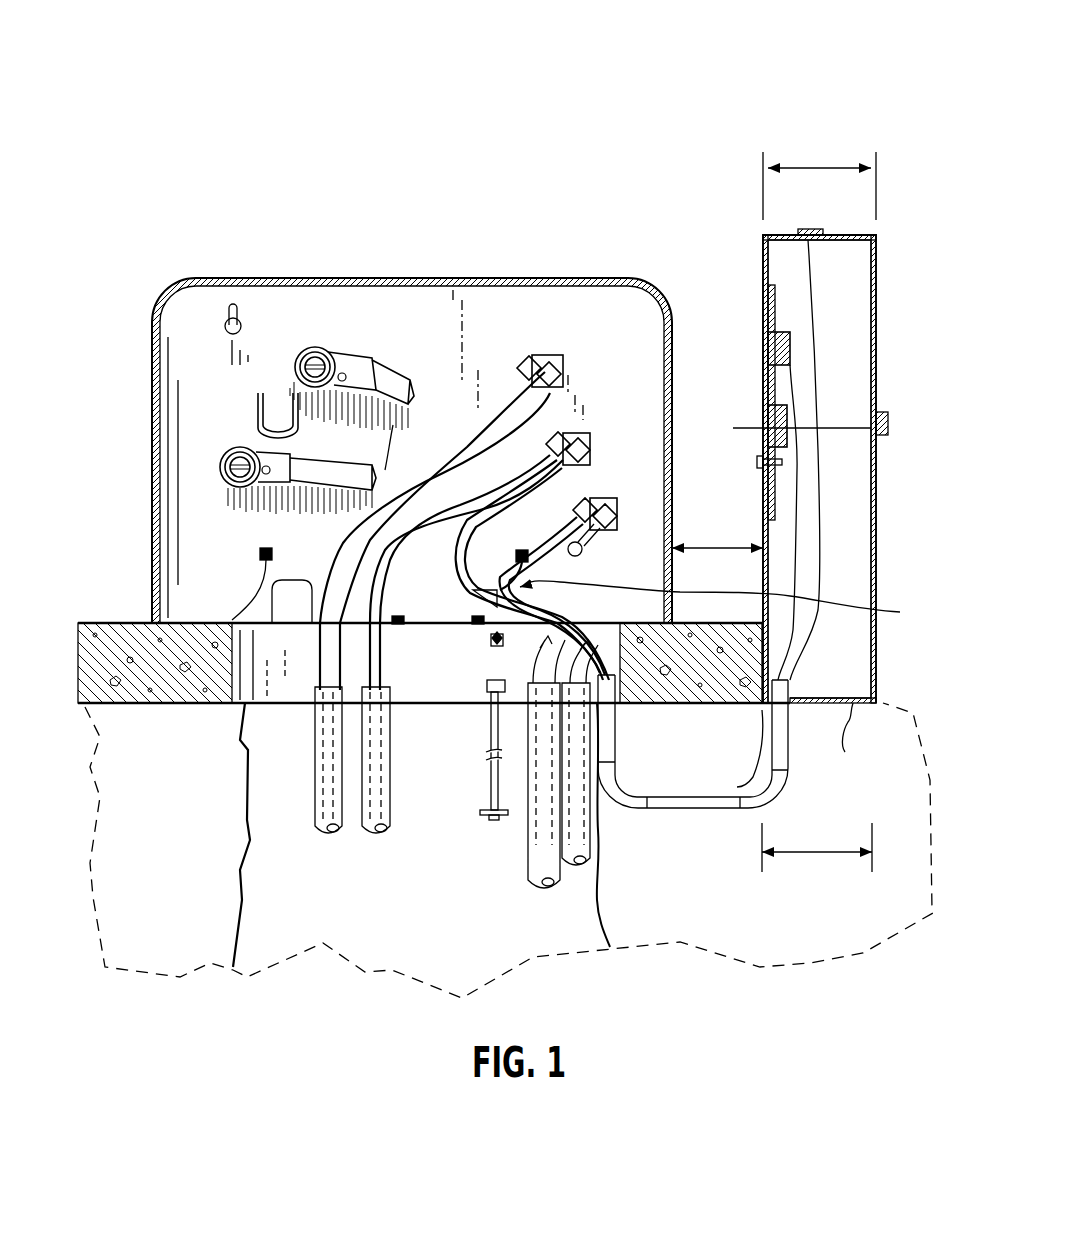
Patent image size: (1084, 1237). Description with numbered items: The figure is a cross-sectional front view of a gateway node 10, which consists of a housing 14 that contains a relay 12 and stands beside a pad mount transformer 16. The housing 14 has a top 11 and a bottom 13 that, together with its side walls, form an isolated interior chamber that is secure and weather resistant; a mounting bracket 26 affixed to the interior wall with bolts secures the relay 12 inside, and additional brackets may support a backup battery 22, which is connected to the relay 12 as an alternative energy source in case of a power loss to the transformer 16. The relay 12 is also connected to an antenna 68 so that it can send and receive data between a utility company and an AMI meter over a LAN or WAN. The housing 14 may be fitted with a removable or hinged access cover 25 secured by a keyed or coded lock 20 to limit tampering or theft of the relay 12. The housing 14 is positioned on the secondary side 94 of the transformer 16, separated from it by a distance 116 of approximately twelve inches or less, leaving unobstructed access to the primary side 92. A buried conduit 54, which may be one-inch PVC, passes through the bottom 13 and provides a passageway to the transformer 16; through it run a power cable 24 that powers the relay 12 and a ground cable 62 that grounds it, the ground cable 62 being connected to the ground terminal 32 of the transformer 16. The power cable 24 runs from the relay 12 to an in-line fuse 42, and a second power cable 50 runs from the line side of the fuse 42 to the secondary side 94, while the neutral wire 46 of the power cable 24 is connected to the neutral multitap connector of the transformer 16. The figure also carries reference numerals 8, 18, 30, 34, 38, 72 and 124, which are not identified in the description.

The enclosure interior 8 is at (525, 302).
The gateway node 10 is at (830, 78).
The top 11 is at (770, 233).
The relay 12 is at (770, 337).
The bottom 13 is at (845, 741).
The housing 14 is at (785, 449).
The pad mount transformer 16 is at (212, 278).
The fastener 18 is at (752, 462).
The keyed or coded lock 20 is at (896, 419).
The backup battery 22 is at (789, 426).
The power cable 24 is at (846, 563).
The access cover 25 is at (876, 338).
The mounting bracket 26 is at (770, 284).
The conduit box width 30 is at (815, 860).
The ground terminal 32 is at (490, 728).
The enclosure base width 34 is at (247, 902).
The ground connection 38 is at (493, 642).
The in-line fuse 42 is at (723, 601).
The neutral wire 46 is at (542, 515).
The second power cable 50 is at (474, 497).
The conduit 54 is at (716, 810).
The ground cable 62 is at (625, 645).
The antenna 68 is at (808, 229).
The conduit box depth 72 is at (815, 168).
The primary side 92 is at (230, 408).
The secondary side 94 is at (666, 380).
The distance 116 is at (710, 548).
The inner space 124 is at (850, 377).